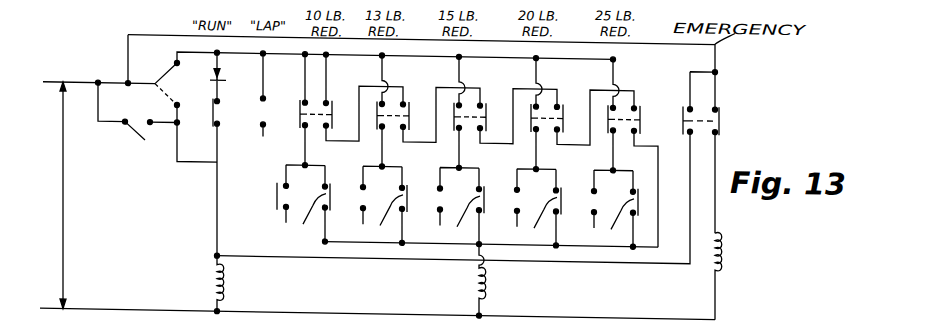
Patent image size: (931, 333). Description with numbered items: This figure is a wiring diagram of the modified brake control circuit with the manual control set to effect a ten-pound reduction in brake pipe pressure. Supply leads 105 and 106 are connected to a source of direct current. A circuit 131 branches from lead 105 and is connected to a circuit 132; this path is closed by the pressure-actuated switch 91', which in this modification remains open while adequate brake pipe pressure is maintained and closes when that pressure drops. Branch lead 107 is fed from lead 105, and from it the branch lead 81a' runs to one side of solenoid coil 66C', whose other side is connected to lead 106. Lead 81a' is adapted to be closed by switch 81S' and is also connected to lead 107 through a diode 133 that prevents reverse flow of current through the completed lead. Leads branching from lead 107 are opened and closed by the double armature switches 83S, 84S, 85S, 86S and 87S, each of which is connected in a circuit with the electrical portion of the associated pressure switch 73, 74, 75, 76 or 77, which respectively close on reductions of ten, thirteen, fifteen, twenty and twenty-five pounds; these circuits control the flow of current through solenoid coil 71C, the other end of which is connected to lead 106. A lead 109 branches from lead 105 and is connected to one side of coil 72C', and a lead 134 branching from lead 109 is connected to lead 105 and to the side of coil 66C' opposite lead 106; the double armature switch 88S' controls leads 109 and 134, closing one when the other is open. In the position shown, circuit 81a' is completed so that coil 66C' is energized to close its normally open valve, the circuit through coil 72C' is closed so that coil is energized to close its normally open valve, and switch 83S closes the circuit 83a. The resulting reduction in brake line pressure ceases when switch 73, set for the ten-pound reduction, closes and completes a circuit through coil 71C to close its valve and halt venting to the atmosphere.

The lead 105 is at (78, 80).
The lead 106 is at (114, 307).
The branch lead 107 is at (196, 47).
The circuit 131 is at (96, 108).
The pressure-actuated switch 91' is at (145, 150).
The circuit 132 is at (194, 160).
The diode 133 is at (233, 60).
The switch 81S' is at (239, 131).
The lead 83a is at (303, 64).
The branch lead 81a' is at (194, 190).
The solenoid coil 66C' is at (248, 285).
The switch 83S is at (312, 125).
The switch 84S is at (389, 124).
The switch 85S is at (466, 122).
The switch 86S is at (543, 121).
The switch 87S is at (620, 120).
The switch 88S' is at (726, 104).
The pressure-controlled electric switch 73 is at (303, 206).
The pressure-controlled electric switch 74 is at (384, 206).
The pressure-controlled electric switch 75 is at (461, 206).
The pressure-controlled electric switch 76 is at (538, 208).
The pressure-controlled electric switch 77 is at (615, 209).
The solenoid coil 71C is at (484, 280).
The lead 134 is at (583, 255).
The lead 109 is at (715, 208).
The solenoid coil 72C' is at (748, 276).